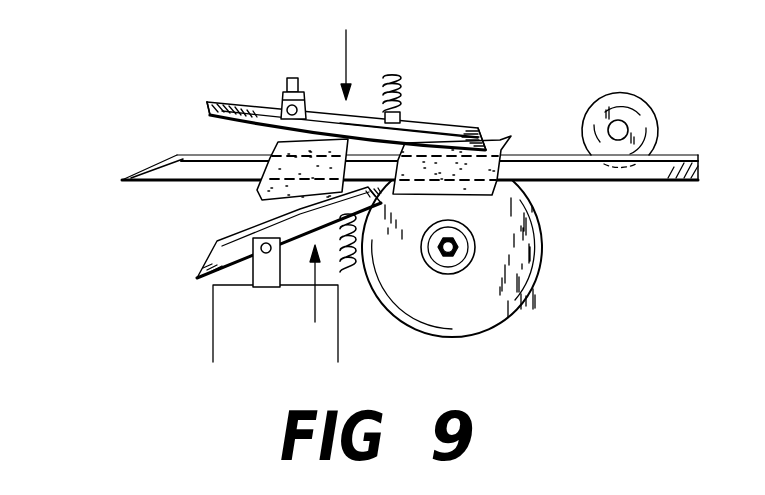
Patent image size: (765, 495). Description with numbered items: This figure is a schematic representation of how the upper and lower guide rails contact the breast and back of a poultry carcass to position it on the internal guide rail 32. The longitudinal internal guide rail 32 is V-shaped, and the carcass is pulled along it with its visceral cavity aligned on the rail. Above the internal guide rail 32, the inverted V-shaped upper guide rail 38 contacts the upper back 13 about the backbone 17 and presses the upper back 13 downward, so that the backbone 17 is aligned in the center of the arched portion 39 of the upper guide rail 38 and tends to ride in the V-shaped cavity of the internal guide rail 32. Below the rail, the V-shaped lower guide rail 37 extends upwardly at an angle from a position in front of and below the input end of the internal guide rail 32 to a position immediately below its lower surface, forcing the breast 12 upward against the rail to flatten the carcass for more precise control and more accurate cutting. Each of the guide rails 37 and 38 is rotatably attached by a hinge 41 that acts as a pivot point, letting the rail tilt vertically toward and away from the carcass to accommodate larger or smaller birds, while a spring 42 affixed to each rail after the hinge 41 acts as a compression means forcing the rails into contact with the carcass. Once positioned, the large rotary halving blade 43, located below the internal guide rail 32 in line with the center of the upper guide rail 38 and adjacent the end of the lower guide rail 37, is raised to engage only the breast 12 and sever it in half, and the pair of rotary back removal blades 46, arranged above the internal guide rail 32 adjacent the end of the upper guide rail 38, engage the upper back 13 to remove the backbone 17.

The breast 12 is at (265, 196).
The upper back 13 is at (273, 152).
The backbone 17 is at (278, 141).
The internal guide rail 32 is at (160, 173).
The lower guide rail 37 is at (211, 260).
The upper guide rail 38 is at (250, 70).
The arched portion 39 is at (436, 131).
The hinge 41 is at (300, 86).
The spring 42 is at (395, 78).
The rotary halving blade 43 is at (463, 318).
The rotary back removal blades 46 is at (610, 110).